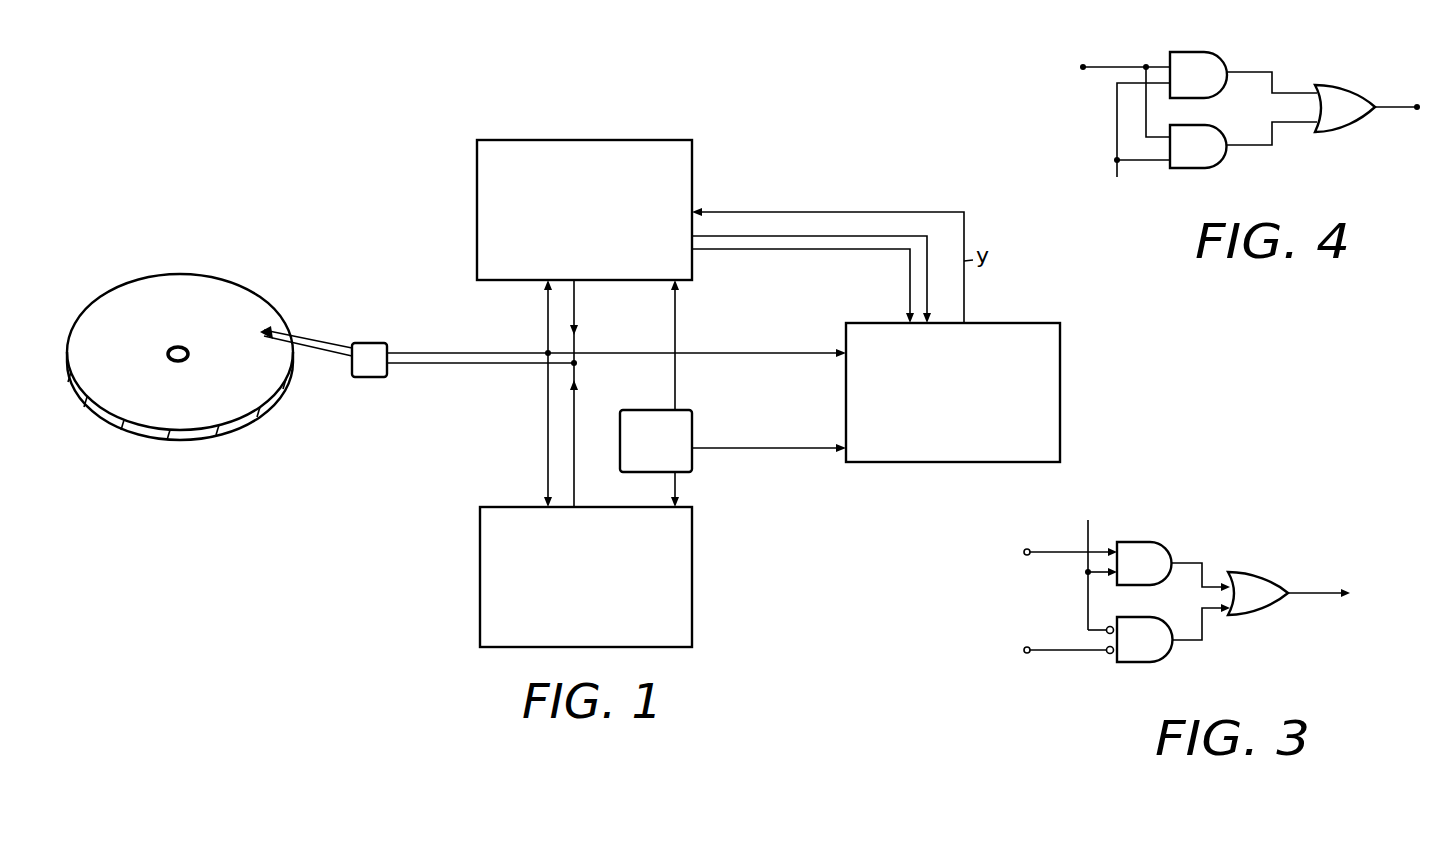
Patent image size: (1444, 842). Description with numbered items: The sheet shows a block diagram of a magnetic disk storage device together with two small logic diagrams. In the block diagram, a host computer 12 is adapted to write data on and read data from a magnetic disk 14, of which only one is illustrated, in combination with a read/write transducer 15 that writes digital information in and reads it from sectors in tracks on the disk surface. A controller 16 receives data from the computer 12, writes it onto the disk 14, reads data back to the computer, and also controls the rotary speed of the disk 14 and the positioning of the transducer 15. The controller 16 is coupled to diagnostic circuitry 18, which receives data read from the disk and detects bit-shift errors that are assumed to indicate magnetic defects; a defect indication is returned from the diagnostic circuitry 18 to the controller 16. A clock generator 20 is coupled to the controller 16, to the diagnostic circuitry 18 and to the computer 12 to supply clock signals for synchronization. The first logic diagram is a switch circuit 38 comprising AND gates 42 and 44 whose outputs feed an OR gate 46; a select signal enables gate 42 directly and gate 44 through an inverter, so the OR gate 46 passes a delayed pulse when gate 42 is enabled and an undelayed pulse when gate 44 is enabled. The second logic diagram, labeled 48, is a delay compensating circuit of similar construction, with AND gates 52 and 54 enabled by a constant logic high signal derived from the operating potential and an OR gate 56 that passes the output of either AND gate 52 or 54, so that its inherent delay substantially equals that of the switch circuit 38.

In FIG. 1, the computer 12 is at (692, 572).
In FIG. 1, the disk 14 is at (222, 277).
In FIG. 1, the read/write transducer 15 is at (283, 298).
In FIG. 1, the controller 16 is at (692, 180).
In FIG. 1, the diagnostic circuitry 18 is at (1060, 352).
In FIG. 1, the clock generator 20 is at (692, 425).
In FIG. 3, the switch circuit 38 is at (1201, 522).
In FIG. 3, the AND gate 42 is at (1141, 543).
In FIG. 3, the AND gate 44 is at (1152, 644).
In FIG. 3, the OR gate 46 is at (1257, 603).
In FIG. 4, the logic circuit 48 is at (1277, 45).
In FIG. 4, the AND gate 52 is at (1218, 33).
In FIG. 4, the AND gate 54 is at (1225, 157).
In FIG. 4, the OR gate 56 is at (1352, 92).